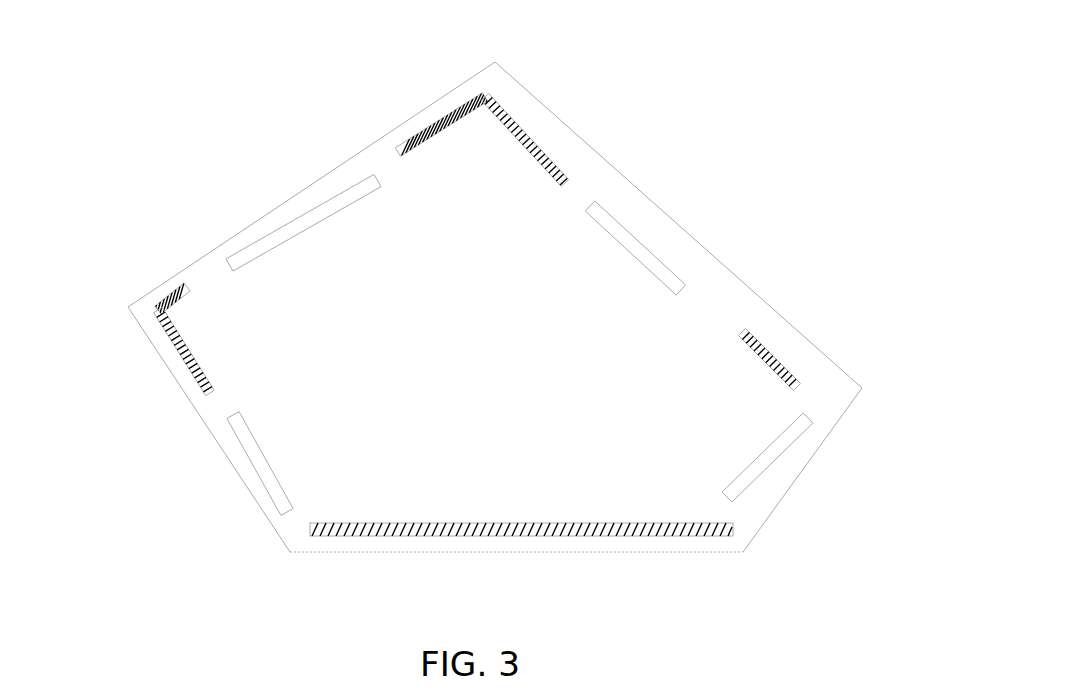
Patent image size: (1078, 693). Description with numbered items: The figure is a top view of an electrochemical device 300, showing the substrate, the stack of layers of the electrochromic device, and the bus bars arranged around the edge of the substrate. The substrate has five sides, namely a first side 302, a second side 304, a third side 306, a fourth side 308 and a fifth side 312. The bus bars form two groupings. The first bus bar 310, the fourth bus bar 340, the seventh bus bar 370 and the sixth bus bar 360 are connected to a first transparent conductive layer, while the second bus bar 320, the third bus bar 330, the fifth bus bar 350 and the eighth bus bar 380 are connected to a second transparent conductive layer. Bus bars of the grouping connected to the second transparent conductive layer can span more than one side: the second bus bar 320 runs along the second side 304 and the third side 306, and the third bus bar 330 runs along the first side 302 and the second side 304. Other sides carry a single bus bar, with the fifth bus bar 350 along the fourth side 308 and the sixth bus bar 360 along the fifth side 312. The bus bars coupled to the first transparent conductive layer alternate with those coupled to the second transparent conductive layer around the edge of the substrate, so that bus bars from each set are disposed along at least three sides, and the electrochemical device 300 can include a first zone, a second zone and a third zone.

The electrochemical device 300 is at (477, 313).
The first side 302 is at (203, 425).
The second side 304 is at (378, 142).
The third side 306 is at (723, 263).
The fourth side 308 is at (635, 553).
The first bus bar 310 is at (287, 492).
The fifth side 312 is at (788, 492).
The second bus bar 320 is at (460, 107).
The third bus bar 330 is at (178, 348).
The fourth bus bar 340 is at (287, 242).
The fifth bus bar 350 is at (488, 536).
The sixth bus bar 360 is at (787, 452).
The seventh bus bar 370 is at (637, 238).
The eighth bus bar 380 is at (767, 352).